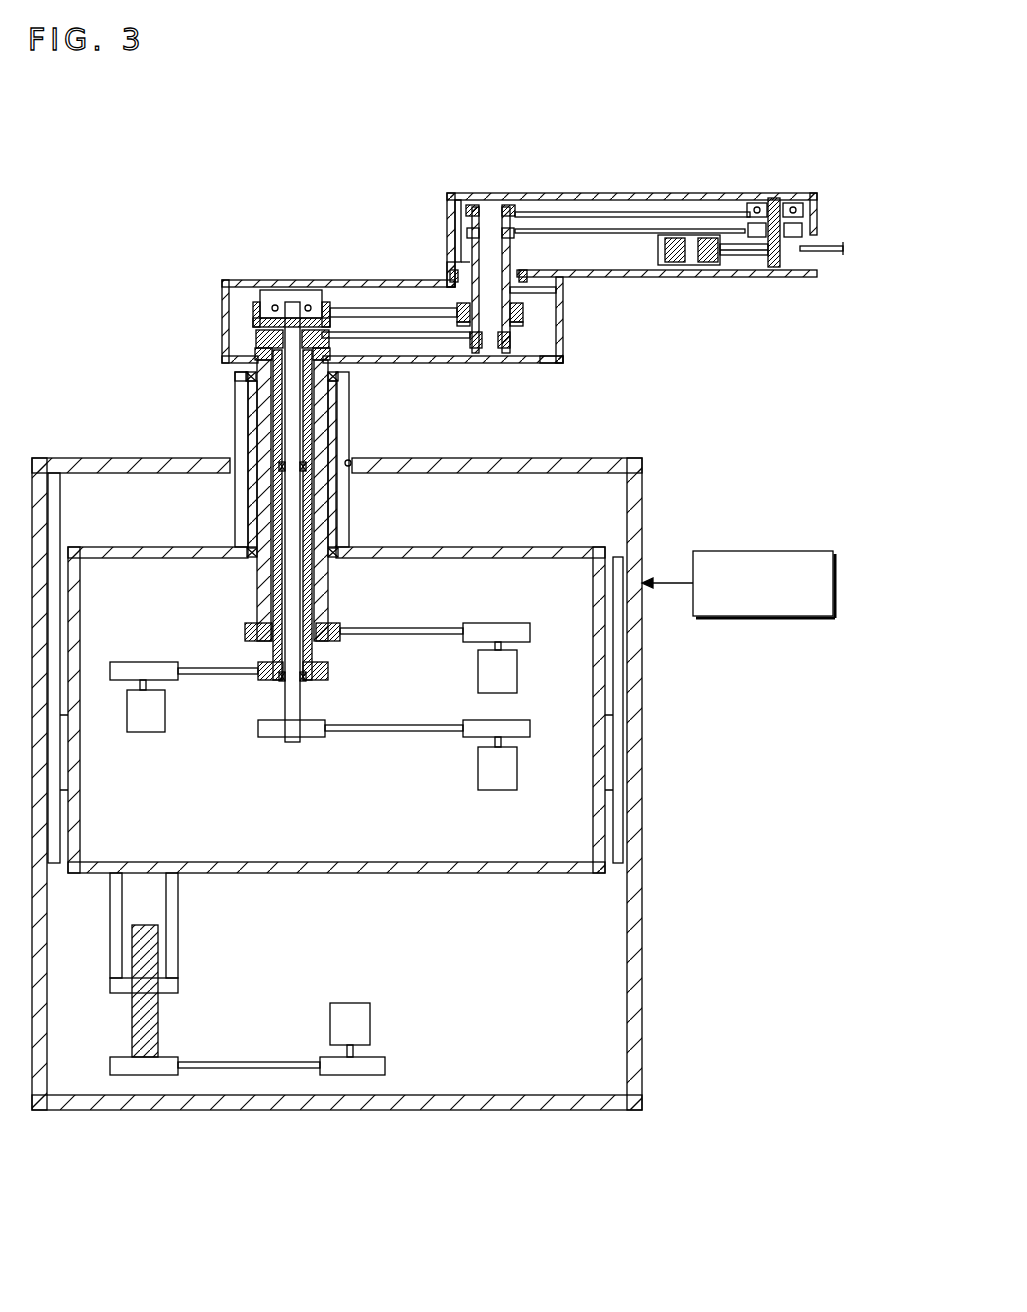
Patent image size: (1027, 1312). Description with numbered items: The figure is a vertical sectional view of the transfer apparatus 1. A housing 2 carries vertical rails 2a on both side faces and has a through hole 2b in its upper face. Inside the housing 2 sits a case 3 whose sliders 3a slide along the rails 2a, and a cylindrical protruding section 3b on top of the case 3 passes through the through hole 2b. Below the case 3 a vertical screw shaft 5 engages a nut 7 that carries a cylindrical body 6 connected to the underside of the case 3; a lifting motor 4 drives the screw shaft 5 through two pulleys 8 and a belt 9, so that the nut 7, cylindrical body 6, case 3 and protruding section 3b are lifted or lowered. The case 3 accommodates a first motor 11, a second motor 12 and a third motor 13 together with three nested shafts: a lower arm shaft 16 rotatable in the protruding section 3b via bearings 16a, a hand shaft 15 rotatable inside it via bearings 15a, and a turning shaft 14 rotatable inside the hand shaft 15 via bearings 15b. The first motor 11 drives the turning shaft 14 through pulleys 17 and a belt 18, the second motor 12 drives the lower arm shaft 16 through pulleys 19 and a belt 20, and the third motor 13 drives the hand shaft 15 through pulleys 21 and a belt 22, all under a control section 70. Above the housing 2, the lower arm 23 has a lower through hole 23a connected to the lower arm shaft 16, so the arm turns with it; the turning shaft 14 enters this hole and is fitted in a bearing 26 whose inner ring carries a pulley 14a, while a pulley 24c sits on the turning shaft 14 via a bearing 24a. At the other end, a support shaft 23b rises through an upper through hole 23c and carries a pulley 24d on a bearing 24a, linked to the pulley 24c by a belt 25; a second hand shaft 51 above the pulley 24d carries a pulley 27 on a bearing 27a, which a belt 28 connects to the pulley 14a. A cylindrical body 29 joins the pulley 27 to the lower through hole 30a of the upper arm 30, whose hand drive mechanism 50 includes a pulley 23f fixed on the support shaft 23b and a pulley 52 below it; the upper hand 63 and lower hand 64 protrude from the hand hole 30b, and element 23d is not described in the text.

The transfer apparatus 1 is at (757, 1192).
The housing 2 is at (635, 870).
The rails 2a is at (56, 555).
The through hole 2b is at (352, 455).
The case 3 is at (545, 873).
The sliders 3a is at (65, 775).
The protruding section 3b is at (240, 433).
The lifting motor 4 is at (372, 1025).
The screw shaft 5 is at (160, 950).
The cylindrical body 6 is at (172, 906).
The nut 7 is at (172, 985).
The pulleys 8 is at (128, 1076).
The belt 9 is at (216, 1069).
The first motor 11 is at (495, 790).
The second motor 12 is at (510, 678).
The third motor 13 is at (152, 732).
The turning shaft 14 is at (292, 413).
The pulley 14a is at (257, 302).
The hand shaft 15 is at (265, 506).
The bearings 15a is at (262, 352).
The bearings 15b is at (310, 468).
The lower arm shaft 16 is at (322, 394).
The bearings 16a is at (240, 388).
The pulleys 17 is at (270, 737).
The belt 18 is at (413, 725).
The pulleys 19 is at (248, 630).
The belt 20 is at (413, 628).
The pulleys 21 is at (140, 662).
The belt 22 is at (198, 674).
The lower arm 23 is at (552, 363).
The lower through hole 23a is at (235, 375).
The support shaft 23b is at (492, 353).
The upper through hole 23c is at (523, 266).
The housing partition 23d is at (527, 292).
The pulley 23f is at (508, 205).
The bearing 24a is at (257, 335).
The pulley 24c is at (327, 327).
The pulley 24d is at (557, 363).
The belt 25 is at (360, 330).
The bearing 26 is at (292, 302).
The pulley 27 is at (523, 313).
The bearing 27a is at (523, 323).
The belt 28 is at (375, 312).
The cylindrical body 29 is at (453, 295).
The upper arm 30 is at (680, 193).
The lower through hole 30a is at (455, 275).
The hand hole 30b is at (818, 235).
The hand drive mechanism 50 is at (582, 212).
The second hand shaft 51 is at (468, 205).
The pulley 52 is at (525, 210).
The upper hand 63 is at (837, 290).
The lower hand 64 is at (824, 285).
The control section 70 is at (788, 551).